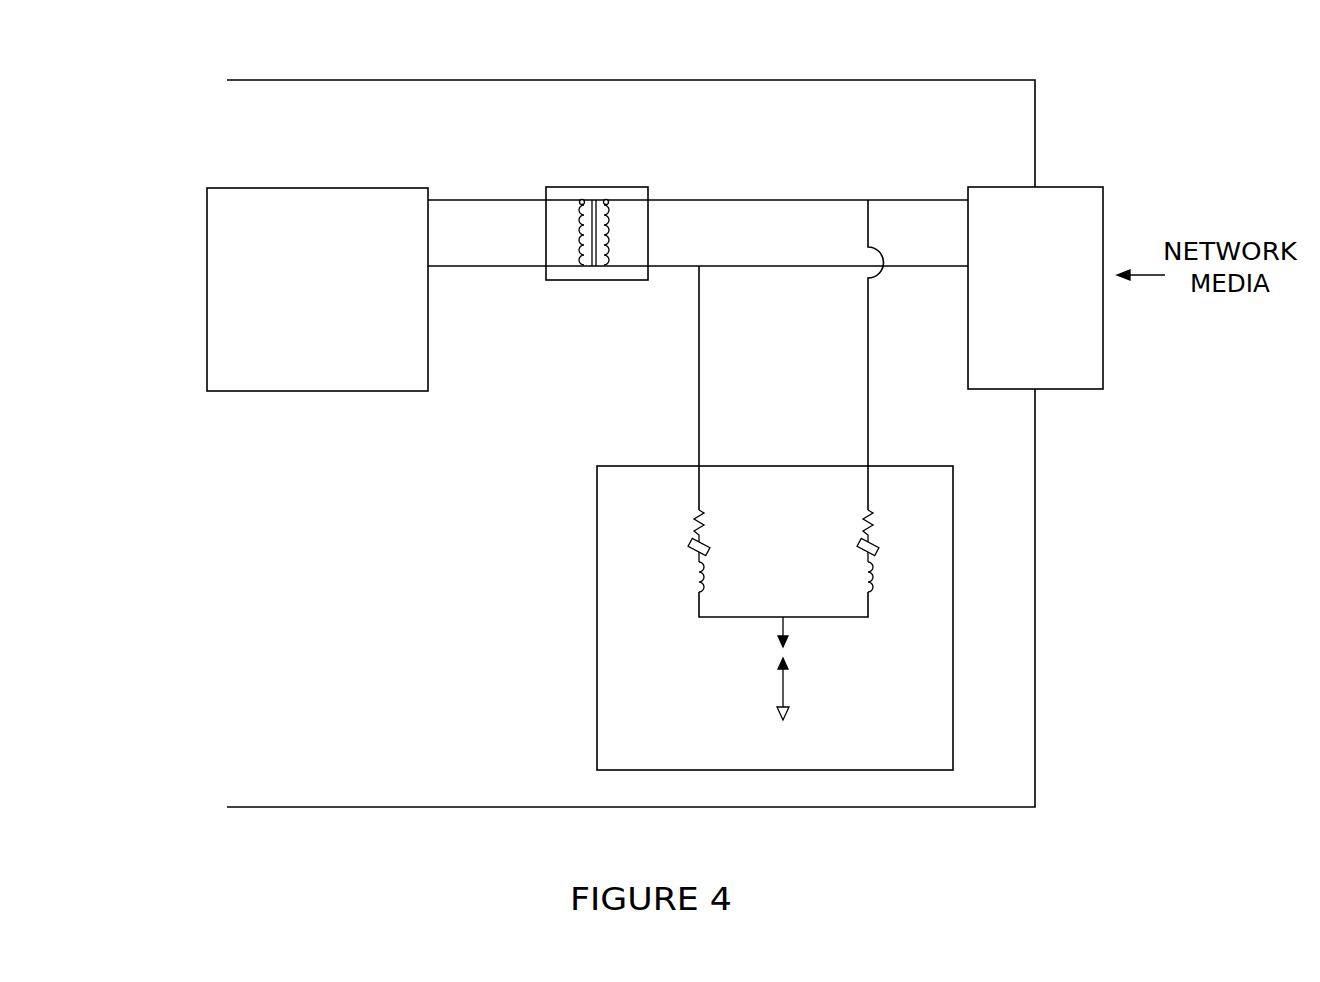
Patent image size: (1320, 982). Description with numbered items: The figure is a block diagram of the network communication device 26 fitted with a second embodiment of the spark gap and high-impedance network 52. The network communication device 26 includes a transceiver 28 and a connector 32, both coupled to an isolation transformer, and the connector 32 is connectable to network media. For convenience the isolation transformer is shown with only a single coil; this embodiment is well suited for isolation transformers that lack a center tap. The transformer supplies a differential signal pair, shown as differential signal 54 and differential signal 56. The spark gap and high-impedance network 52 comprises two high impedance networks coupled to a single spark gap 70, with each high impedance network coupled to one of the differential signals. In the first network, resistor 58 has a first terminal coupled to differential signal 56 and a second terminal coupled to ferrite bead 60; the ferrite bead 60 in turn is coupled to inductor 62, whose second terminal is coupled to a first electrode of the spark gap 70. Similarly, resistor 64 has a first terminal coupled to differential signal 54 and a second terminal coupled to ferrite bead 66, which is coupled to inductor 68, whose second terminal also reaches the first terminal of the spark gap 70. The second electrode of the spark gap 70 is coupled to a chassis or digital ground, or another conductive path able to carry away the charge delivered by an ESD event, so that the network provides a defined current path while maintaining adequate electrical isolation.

The network communication device 26 is at (328, 823).
The transceiver 28 is at (357, 392).
The connector 32 is at (1003, 390).
The spark gap and high-impedance network 52 is at (597, 714).
The differential signal 54 is at (786, 200).
The differential signal 56 is at (789, 266).
The resistor 58 is at (698, 518).
The ferrite bead 60 is at (712, 549).
The inductor 62 is at (697, 575).
The resistor 64 is at (866, 518).
The ferrite bead 66 is at (881, 549).
The inductor 68 is at (866, 575).
The spark gap 70 is at (768, 660).